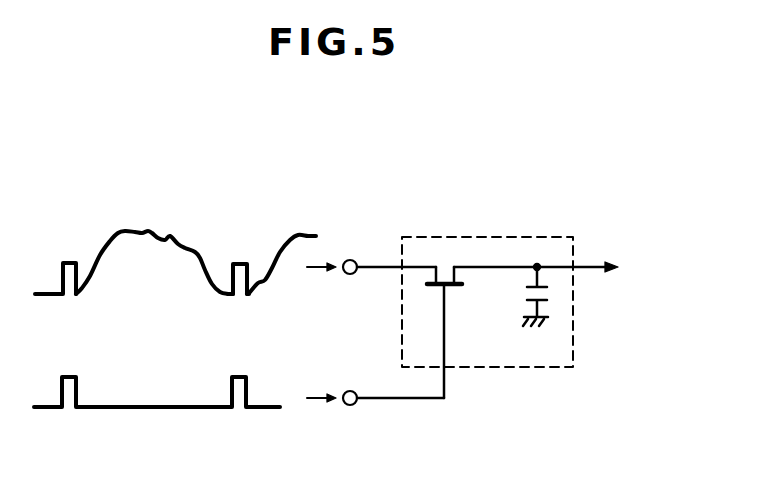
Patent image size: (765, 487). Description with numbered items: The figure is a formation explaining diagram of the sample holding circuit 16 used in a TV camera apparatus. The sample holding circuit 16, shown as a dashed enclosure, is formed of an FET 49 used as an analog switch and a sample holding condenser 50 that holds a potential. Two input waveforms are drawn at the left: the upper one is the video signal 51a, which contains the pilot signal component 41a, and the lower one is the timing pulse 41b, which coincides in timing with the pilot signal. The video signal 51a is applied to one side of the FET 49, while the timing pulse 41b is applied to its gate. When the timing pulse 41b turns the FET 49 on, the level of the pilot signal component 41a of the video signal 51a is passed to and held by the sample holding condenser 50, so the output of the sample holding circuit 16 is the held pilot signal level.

The pilot signal component 41a is at (72, 262).
The video signal 51a is at (147, 232).
The timing pulse 41b is at (72, 376).
The FET 49 is at (447, 270).
The sample holding condenser 50 is at (548, 293).
The sample holding circuit 16 is at (540, 237).